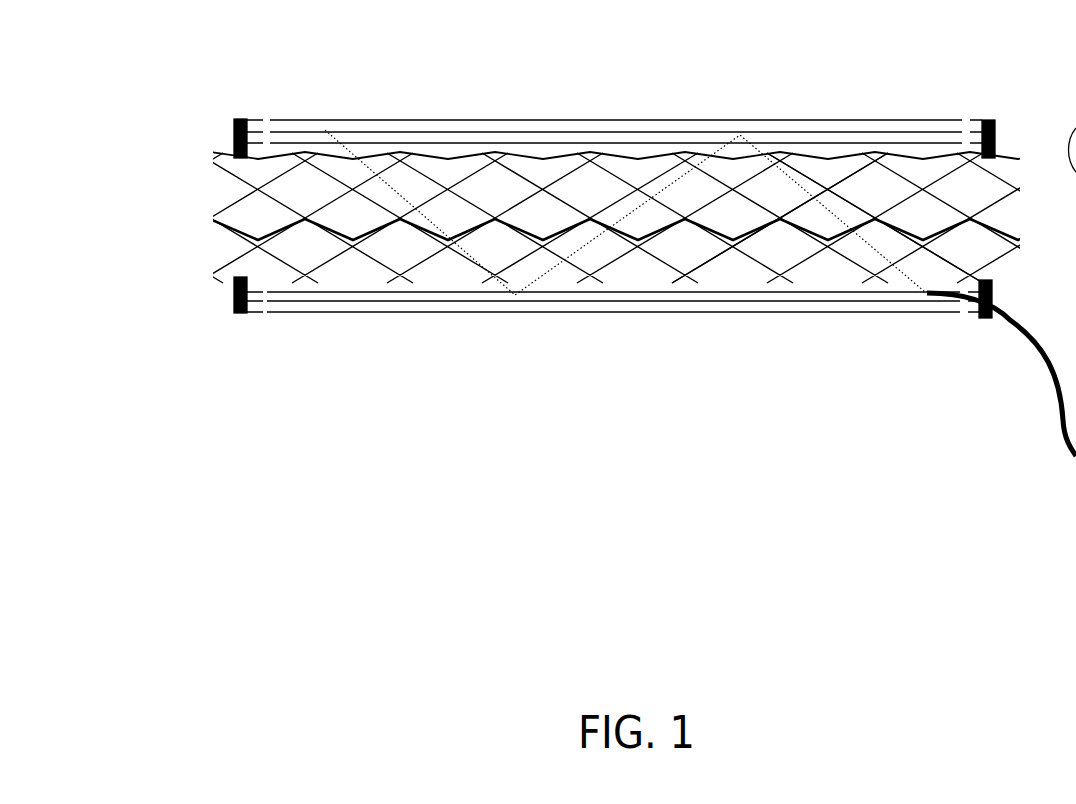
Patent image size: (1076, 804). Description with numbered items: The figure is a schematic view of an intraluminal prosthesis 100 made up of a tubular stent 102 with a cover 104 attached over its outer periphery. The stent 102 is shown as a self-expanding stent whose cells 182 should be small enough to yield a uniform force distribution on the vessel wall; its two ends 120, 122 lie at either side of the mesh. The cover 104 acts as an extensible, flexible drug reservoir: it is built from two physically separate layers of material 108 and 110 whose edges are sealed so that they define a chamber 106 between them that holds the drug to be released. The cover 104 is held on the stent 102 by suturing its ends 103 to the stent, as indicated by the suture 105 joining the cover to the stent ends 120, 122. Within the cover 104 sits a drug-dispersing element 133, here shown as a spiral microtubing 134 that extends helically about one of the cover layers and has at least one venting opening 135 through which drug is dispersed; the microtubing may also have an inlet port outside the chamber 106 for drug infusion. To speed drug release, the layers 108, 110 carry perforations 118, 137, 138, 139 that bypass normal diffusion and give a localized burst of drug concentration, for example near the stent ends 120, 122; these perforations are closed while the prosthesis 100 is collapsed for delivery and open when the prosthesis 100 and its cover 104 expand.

The prosthesis 100 is at (541, 288).
The tubular stent 102 is at (579, 106).
The cover 104 is at (567, 336).
The end of stent 120 is at (209, 216).
The venting opening 135 is at (632, 212).
The spiral microtubing 134 is at (805, 188).
The end of stent 122 is at (1018, 229).
The suture 105 is at (228, 133).
The perforation 137 is at (268, 113).
The perforation 138 is at (972, 111).
The end of cover 103 is at (233, 318).
The perforation 139 is at (263, 318).
The layer of material 110 is at (474, 305).
The chamber 106 is at (661, 298).
The layer of material 108 is at (782, 291).
The perforation 118 is at (963, 319).
The drug-dispersing element 133 is at (1030, 352).
The cells of stent 182 is at (830, 258).